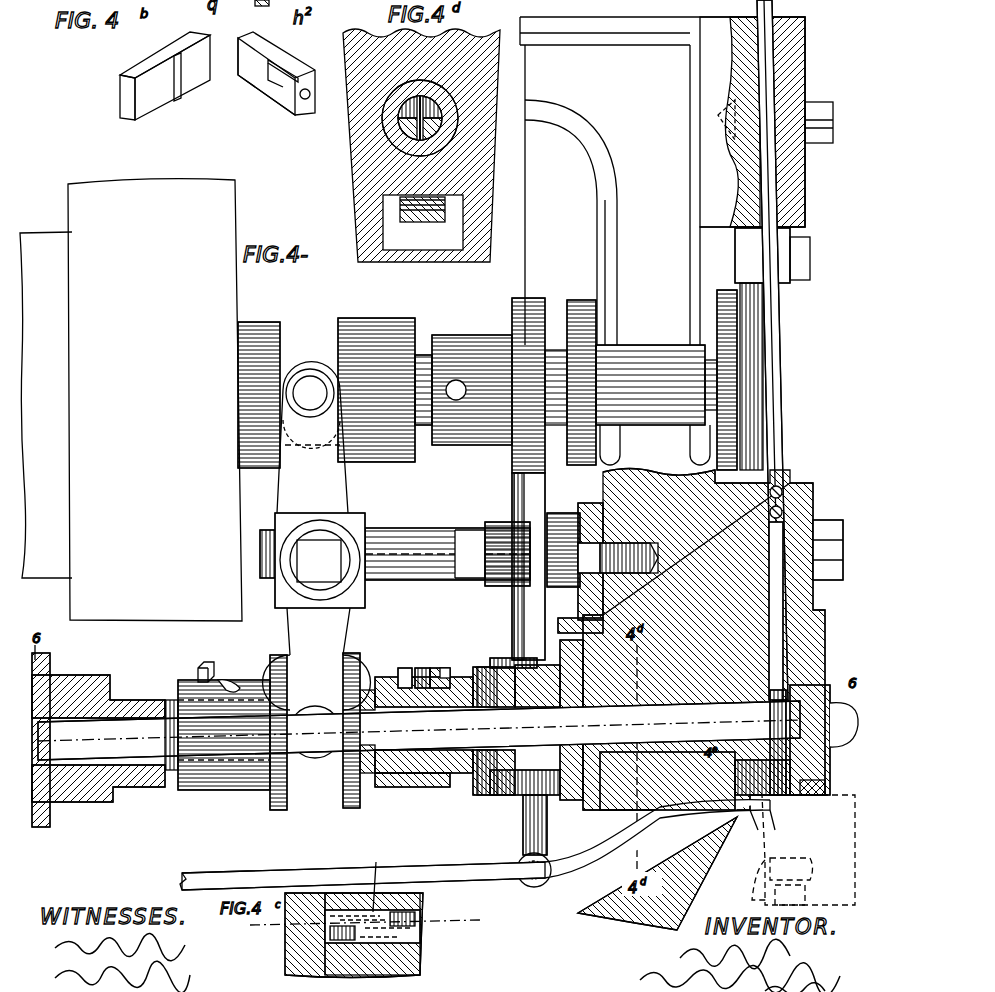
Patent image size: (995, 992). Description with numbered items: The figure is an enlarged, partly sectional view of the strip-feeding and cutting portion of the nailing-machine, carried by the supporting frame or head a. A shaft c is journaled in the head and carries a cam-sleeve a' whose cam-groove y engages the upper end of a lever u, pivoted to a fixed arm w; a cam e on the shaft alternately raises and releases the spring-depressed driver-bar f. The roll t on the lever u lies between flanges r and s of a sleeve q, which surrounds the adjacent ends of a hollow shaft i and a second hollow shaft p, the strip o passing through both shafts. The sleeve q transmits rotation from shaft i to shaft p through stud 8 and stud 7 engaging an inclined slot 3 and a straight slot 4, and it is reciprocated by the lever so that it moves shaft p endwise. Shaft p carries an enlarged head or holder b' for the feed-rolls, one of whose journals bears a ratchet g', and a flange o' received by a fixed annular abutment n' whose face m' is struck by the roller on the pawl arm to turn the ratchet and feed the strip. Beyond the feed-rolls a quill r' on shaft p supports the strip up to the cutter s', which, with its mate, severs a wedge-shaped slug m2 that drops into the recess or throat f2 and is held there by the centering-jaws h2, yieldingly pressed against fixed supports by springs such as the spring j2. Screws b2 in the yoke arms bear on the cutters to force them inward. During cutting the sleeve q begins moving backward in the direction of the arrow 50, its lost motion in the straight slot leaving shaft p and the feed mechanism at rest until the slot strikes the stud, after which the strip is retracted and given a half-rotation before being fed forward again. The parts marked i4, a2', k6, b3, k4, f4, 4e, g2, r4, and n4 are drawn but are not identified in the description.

In FIG. 4D, the supporting frame or head a is at (443, 145).
In FIG. 4D, the hollow shaft p is at (450, 135).
In FIG. 4, the hollow shaft p is at (453, 682).
In FIG. 4D, the quill r' is at (453, 107).
In FIG. 4, the quill r' is at (701, 640).
In FIG. 4D, the guide block i4 is at (448, 215).
In FIG. 4, the frame bracket a2' is at (676, 181).
In FIG. 4, the cam e is at (748, 320).
In FIG. 4, the driver-bar f is at (775, 338).
In FIG. 4, the cam-groove y is at (310, 337).
In FIG. 4, the cam-sleeve a' is at (376, 372).
In FIG. 4, the shaft c is at (424, 333).
In FIG. 4, the lever bar k6 is at (520, 305).
In FIG. 4, the screw b2 is at (578, 298).
In FIG. 4, the cylinder b3 is at (568, 466).
In FIG. 4, the lever k4 is at (522, 492).
In FIG. 4, the fixed arm w is at (410, 533).
In FIG. 4, the flange r is at (324, 624).
In FIG. 4, the screw f4 is at (777, 575).
In FIG. 4, the strip o is at (419, 757).
In FIG. 4, the hollow shaft i is at (135, 700).
In FIG. 4, the sleeve q is at (225, 785).
In FIG. 4, the stud 8 is at (204, 662).
In FIG. 4, the inclined slot 3 is at (226, 678).
In FIG. 4, the roll t is at (315, 760).
In FIG. 4, the lever u is at (330, 633).
In FIG. 4, the flange s is at (393, 665).
In FIG. 4, the arrow 50 is at (440, 653).
In FIG. 4, the straight slot 4 is at (435, 680).
In FIG. 4, the stud 7 is at (418, 665).
In FIG. 4, the head or holder b' is at (516, 718).
In FIG. 4, the flange o' is at (527, 627).
In FIG. 4, the ratchet g' is at (525, 798).
In FIG. 4, the fixed annular abutment n' is at (524, 841).
In FIG. 4, the face of abutment m' is at (657, 839).
In FIG. 4, the cutter s' is at (824, 713).
In FIG. 4, the recess or throat f2 is at (786, 712).
In FIG. 4, the section line 4e is at (825, 757).
In FIG. 4, the gear g2 is at (818, 785).
In FIG. 4, the housing part r4 is at (667, 781).
In FIG. 4, the slug m2 is at (790, 795).
In FIG. 4, the centering-jaw h2 is at (765, 800).
In FIG. 4C, the centering-jaw h2 is at (418, 912).
In FIG. 4, the cam outline n4 is at (790, 898).
In FIG. 4C, the spring j2 is at (333, 933).